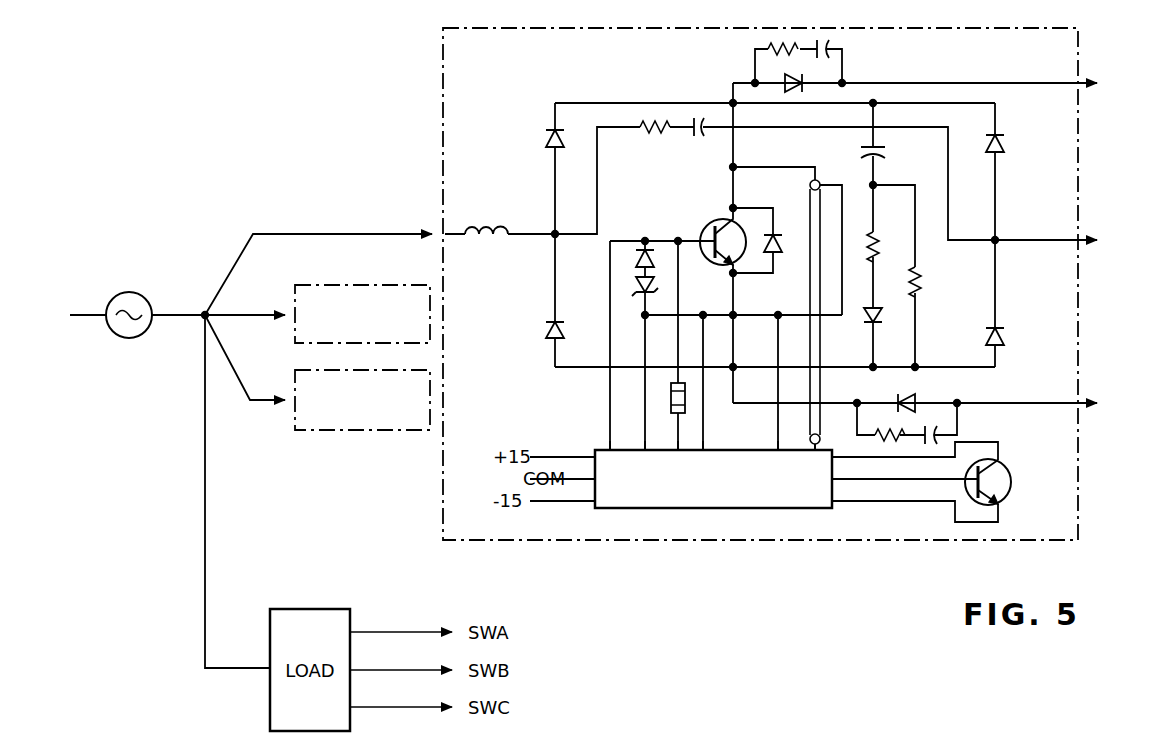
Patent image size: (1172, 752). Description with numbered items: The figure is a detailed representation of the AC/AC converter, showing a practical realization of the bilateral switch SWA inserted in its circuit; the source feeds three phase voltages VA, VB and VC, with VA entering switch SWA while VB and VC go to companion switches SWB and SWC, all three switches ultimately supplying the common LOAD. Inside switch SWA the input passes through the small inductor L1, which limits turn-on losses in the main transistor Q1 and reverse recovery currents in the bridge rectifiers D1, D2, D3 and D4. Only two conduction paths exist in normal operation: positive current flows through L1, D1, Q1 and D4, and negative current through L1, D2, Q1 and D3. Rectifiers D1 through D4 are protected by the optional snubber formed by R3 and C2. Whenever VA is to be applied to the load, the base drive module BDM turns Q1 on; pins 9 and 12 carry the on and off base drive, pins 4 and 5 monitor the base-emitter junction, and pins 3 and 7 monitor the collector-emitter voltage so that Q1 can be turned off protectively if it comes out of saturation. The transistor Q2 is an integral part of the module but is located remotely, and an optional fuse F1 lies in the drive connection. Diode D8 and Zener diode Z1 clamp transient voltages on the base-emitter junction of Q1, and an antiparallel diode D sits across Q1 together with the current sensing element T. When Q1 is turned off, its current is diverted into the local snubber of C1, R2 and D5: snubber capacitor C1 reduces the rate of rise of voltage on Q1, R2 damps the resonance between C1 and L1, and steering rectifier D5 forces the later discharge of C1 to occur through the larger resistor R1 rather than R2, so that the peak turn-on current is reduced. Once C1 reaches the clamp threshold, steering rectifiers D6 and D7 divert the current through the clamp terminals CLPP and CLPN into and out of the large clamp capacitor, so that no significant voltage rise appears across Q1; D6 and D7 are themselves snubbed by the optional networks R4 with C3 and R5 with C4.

The bilateral switch SWA is at (443, 80).
The bilateral switch SWB is at (343, 285).
The bilateral switch SWC is at (343, 430).
The input voltage VA is at (278, 234).
The input voltage VB is at (235, 315).
The input voltage VC is at (262, 400).
The inductor L1 is at (490, 248).
The bridge rectifier D1 is at (544, 139).
The bridge rectifier D2 is at (542, 328).
The bridge rectifier D3 is at (1004, 143).
The bridge rectifier D4 is at (1004, 336).
The steering rectifier D5 is at (882, 313).
The steering rectifier D6 is at (797, 72).
The steering rectifier D7 is at (906, 392).
The diode D8 is at (634, 260).
The antiparallel diode D is at (784, 237).
The Zener diode Z1 is at (634, 290).
The snubber capacitor discharge resistor R1 is at (922, 282).
The damping resistor R2 is at (880, 240).
The snubber resistor R3 is at (648, 138).
The snubber resistor R4 is at (766, 48).
The snubber resistor R5 is at (870, 437).
The snubber capacitor C1 is at (858, 150).
The snubber capacitor C2 is at (700, 140).
The snubber capacitor C3 is at (832, 44).
The snubber capacitor C4 is at (940, 424).
The main transistor Q1 is at (717, 234).
The transistor Q2 is at (1012, 470).
The current transformer T is at (712, 264).
The fuse F1 is at (667, 400).
The base drive module BDM is at (671, 510).
The pin 3 is at (807, 446).
The pin 4 is at (606, 447).
The pin 5 is at (642, 447).
The pin 7 is at (776, 447).
The pin 9 is at (675, 447).
The pin 12 is at (704, 447).
The clamp positive terminal CLPP is at (946, 83).
The clamp negative terminal CLPN is at (947, 403).
The load LOAD is at (1079, 240).